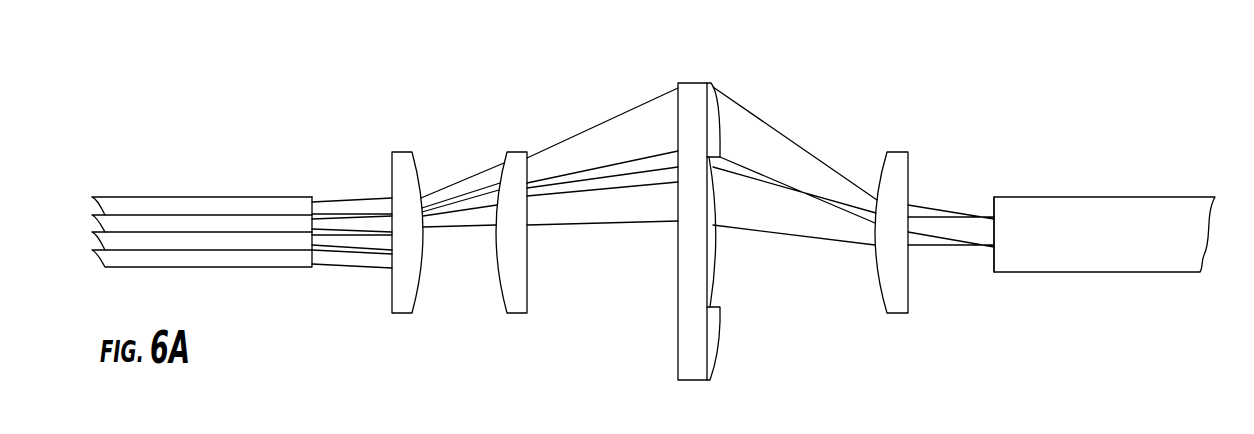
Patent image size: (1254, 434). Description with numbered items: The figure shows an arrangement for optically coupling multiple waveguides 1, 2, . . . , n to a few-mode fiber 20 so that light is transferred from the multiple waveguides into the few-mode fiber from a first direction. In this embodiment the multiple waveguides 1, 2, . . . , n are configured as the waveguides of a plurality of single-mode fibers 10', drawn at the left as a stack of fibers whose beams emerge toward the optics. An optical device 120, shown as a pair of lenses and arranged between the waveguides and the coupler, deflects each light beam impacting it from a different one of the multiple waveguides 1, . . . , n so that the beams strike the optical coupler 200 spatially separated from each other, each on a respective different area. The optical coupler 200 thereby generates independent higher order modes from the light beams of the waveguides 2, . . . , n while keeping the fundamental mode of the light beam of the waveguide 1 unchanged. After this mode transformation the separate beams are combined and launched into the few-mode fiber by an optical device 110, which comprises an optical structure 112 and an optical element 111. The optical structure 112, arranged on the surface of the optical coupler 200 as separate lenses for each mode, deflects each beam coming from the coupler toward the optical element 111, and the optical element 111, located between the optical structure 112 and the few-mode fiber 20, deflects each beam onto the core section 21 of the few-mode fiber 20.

The waveguide 1 is at (137, 196).
The waveguide 2 is at (120, 218).
The waveguide n is at (130, 267).
The single-mode fibers 10' is at (187, 215).
The optical device 120 is at (513, 148).
The optical coupler 200 is at (730, 214).
The optical device 110 is at (820, 214).
The optical element 111 is at (898, 291).
The optical structure 112 is at (715, 353).
The few-mode fiber 20 is at (1104, 203).
The core section 21 is at (1025, 233).